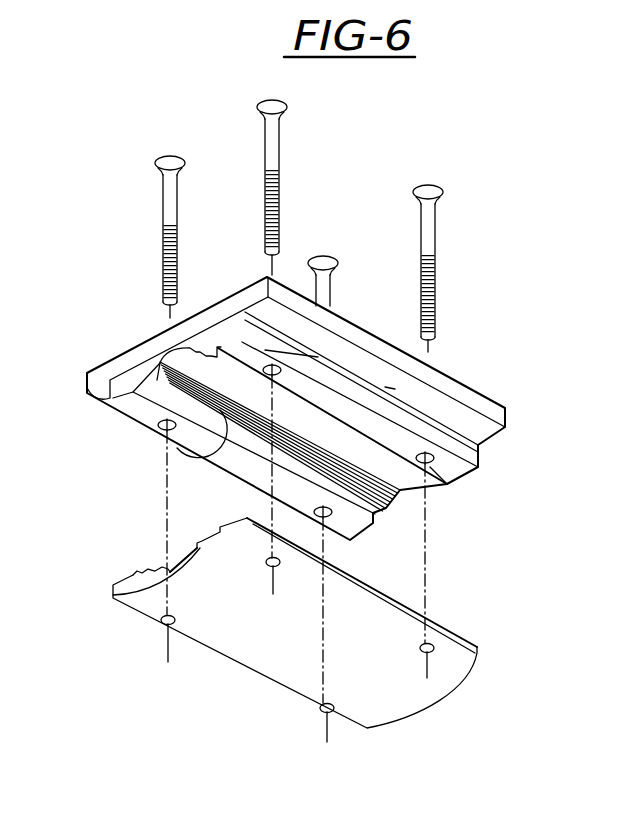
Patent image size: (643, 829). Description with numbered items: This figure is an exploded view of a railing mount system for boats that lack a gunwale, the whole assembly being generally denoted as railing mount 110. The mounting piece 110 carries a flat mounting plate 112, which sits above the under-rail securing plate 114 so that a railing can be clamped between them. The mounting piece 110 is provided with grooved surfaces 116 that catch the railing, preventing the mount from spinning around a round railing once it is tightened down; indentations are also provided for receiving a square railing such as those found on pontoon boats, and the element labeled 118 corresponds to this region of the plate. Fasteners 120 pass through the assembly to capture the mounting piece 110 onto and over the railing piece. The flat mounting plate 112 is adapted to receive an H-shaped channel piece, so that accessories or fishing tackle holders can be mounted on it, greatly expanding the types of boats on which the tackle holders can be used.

The railing mount 110 is at (478, 342).
The flat mounting plate 112 is at (458, 410).
The under-rail securing plate 114 is at (457, 662).
The grooved surfaces 116 is at (177, 446).
The notch 118 is at (197, 558).
The fasteners 120 is at (248, 167).